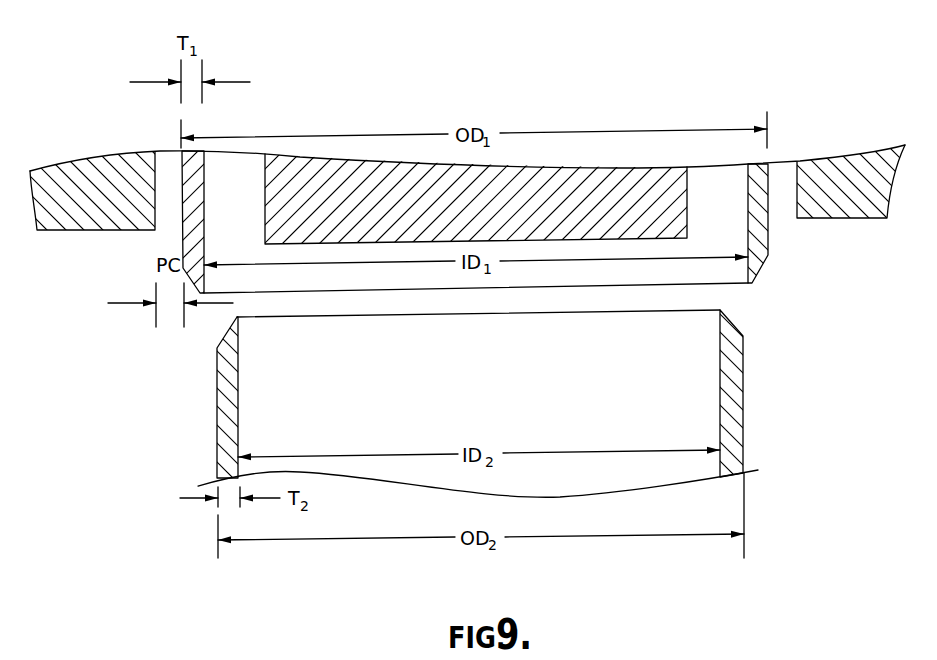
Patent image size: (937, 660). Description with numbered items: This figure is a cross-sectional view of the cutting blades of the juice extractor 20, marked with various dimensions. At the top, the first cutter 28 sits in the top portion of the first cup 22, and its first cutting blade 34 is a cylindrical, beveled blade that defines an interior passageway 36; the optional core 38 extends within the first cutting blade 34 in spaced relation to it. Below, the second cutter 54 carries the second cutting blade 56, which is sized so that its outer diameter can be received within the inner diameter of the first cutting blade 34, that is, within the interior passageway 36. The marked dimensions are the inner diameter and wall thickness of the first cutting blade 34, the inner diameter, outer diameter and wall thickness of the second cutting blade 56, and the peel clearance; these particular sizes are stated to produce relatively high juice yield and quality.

The juice extractor 20 is at (823, 86).
The first cup 22 is at (69, 236).
The first cutter 28 is at (781, 247).
The first cutting blade 34 is at (775, 256).
The interior passageway 36 is at (256, 283).
The core 38 is at (337, 166).
The second cutter 54 is at (201, 416).
The second cutting blade 56 is at (743, 368).